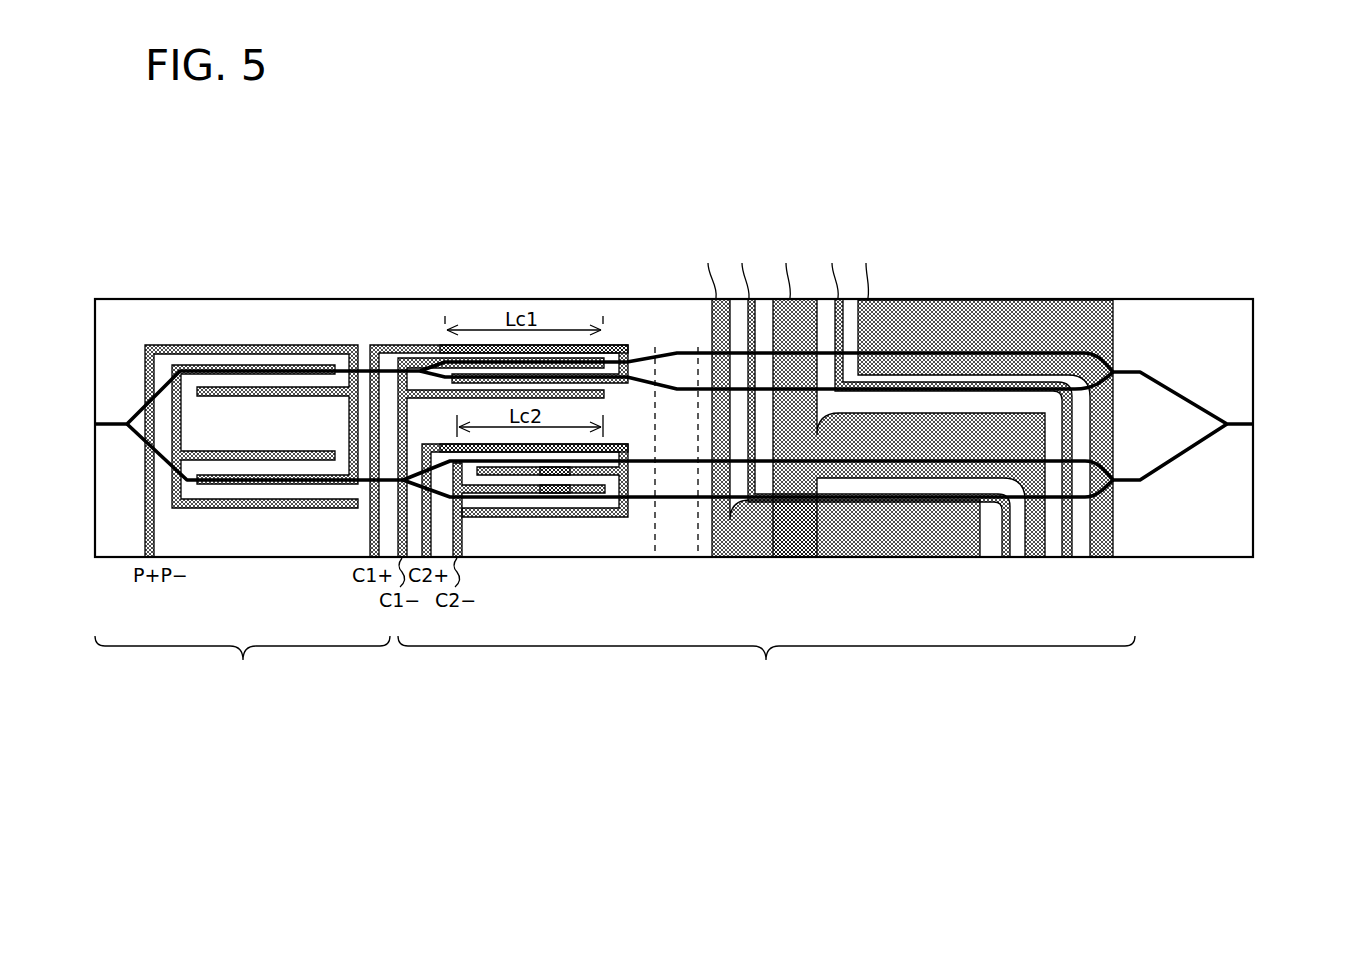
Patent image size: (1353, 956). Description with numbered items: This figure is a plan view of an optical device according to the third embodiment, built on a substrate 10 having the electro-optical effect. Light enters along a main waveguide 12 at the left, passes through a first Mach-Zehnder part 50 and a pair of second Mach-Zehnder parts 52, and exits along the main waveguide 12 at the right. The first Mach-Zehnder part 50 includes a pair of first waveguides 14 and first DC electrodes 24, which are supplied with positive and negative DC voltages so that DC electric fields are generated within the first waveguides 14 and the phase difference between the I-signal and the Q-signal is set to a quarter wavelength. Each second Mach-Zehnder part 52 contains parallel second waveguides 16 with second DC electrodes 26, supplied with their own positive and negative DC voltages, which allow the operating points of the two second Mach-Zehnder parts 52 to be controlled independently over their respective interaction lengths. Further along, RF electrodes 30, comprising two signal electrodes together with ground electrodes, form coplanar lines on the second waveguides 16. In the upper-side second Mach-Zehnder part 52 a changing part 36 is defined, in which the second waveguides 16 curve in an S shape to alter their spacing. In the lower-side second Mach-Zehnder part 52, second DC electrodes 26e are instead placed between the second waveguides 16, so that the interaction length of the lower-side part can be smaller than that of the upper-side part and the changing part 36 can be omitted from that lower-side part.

The substrate 10 is at (1253, 480).
The main waveguide 12 is at (104, 421).
The first waveguides 14 is at (278, 364).
The second waveguides 16 is at (605, 348).
The first DC electrodes 24 is at (221, 346).
The second DC electrodes 26 is at (413, 343).
The second DC electrodes 26e is at (558, 476).
The RF electrodes 30 is at (892, 232).
The changing part 36 is at (702, 345).
The first Mach-Zehnder part 50 is at (242, 665).
The second Mach-Zehnder parts 52 is at (766, 665).